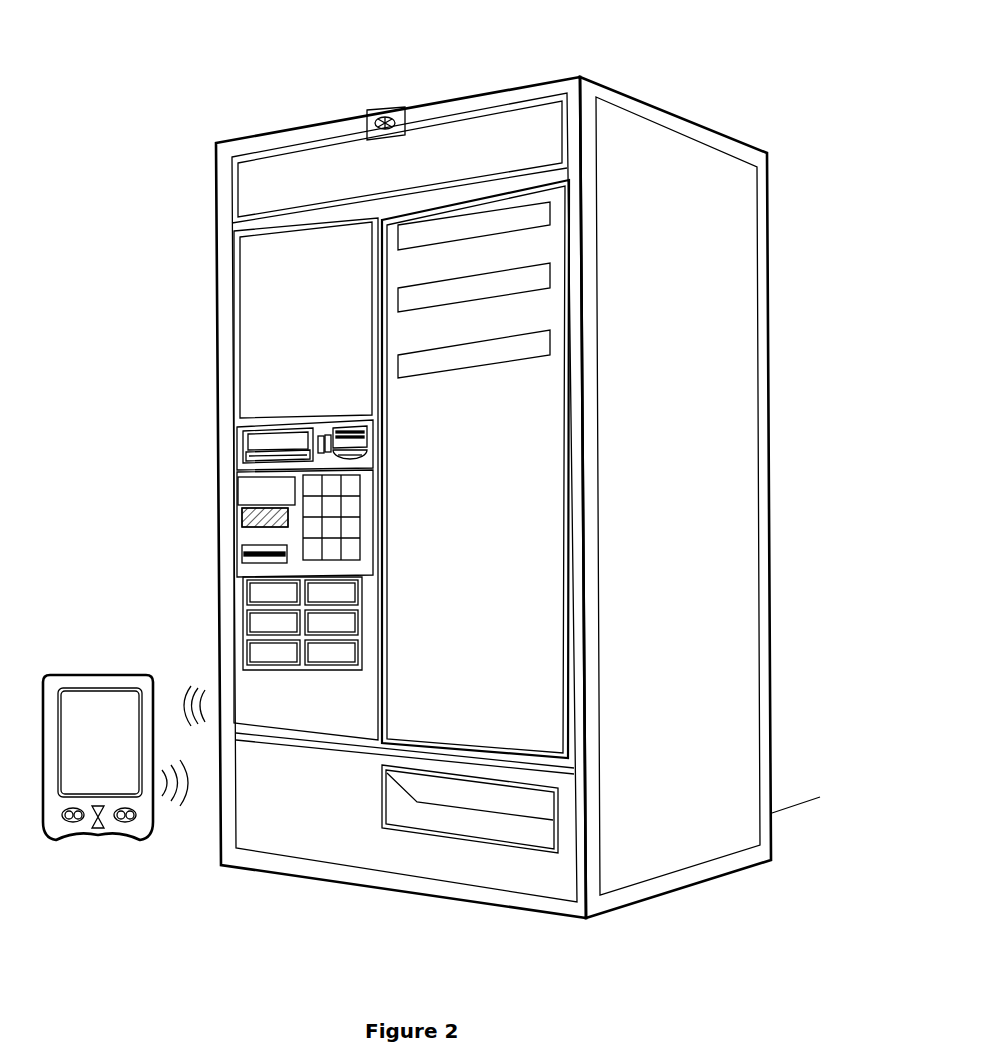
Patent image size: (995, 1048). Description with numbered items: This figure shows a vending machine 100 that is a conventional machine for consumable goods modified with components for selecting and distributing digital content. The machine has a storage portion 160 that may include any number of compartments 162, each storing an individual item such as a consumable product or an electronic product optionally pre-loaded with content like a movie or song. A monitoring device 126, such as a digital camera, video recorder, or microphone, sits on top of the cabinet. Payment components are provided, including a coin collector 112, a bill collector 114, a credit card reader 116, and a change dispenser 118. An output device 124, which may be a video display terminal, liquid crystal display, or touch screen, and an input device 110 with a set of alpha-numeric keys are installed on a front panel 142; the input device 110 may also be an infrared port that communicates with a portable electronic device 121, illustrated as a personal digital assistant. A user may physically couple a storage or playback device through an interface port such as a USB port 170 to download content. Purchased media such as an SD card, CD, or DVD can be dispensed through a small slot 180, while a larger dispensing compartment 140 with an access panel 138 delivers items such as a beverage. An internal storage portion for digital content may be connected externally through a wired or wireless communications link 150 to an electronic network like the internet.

The vending machine 100 is at (427, 42).
The monitoring device 126 is at (385, 110).
The output device 124 is at (257, 317).
The bill collector 114 is at (257, 442).
The coin collector 112 is at (325, 434).
The credit card reader 116 is at (338, 427).
The change dispenser 118 is at (350, 457).
The storage portion 160 is at (475, 469).
The compartments 162 is at (474, 290).
The small slot 180 is at (266, 491).
The input device 110 is at (264, 535).
The USB port 170 is at (238, 557).
The front panel 142 is at (247, 680).
The portable electronic device 121 is at (98, 838).
The access panel 138 is at (433, 790).
The dispensing compartment 140 is at (477, 825).
The communications link 150 is at (807, 822).